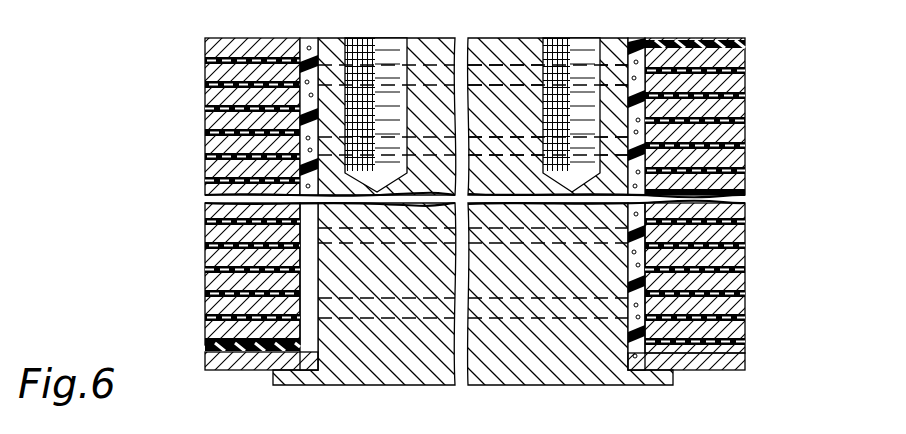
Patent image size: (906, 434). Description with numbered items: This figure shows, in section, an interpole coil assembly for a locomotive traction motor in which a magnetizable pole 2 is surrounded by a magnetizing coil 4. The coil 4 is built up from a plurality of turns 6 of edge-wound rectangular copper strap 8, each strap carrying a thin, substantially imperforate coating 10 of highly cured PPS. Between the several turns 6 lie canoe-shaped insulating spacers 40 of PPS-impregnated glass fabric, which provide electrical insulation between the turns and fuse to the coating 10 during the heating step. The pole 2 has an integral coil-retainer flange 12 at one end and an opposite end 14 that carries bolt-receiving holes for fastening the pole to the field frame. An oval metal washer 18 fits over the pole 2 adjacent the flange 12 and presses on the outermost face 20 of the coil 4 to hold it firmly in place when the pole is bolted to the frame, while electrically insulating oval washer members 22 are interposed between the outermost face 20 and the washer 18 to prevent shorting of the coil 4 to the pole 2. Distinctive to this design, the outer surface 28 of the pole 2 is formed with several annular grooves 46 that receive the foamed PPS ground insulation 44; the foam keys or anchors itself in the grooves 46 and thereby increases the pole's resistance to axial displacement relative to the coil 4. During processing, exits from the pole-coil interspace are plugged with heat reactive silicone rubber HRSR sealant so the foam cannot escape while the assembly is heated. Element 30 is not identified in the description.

The magnetizable pole 2 is at (521, 37).
The magnetizing coil 4 is at (199, 234).
The turns 6 is at (205, 122).
The rectangular copper strap 8 is at (748, 247).
The coating 10 is at (746, 84).
The coil-retainer flange 12 is at (663, 381).
The opposite end 14 is at (613, 40).
The oval metal washer 18 is at (744, 360).
The outermost face 20 is at (261, 354).
The electrically insulating oval washer members 22 is at (207, 358).
The outer surface 28 is at (633, 330).
The lower left substrate block 30 is at (333, 323).
The insulating spacers 40 is at (745, 168).
The foamed PPS ground insulation 44 is at (311, 53).
The annular grooves 46 is at (315, 133).
The heat reactive silicone rubber HRSR is at (716, 45).